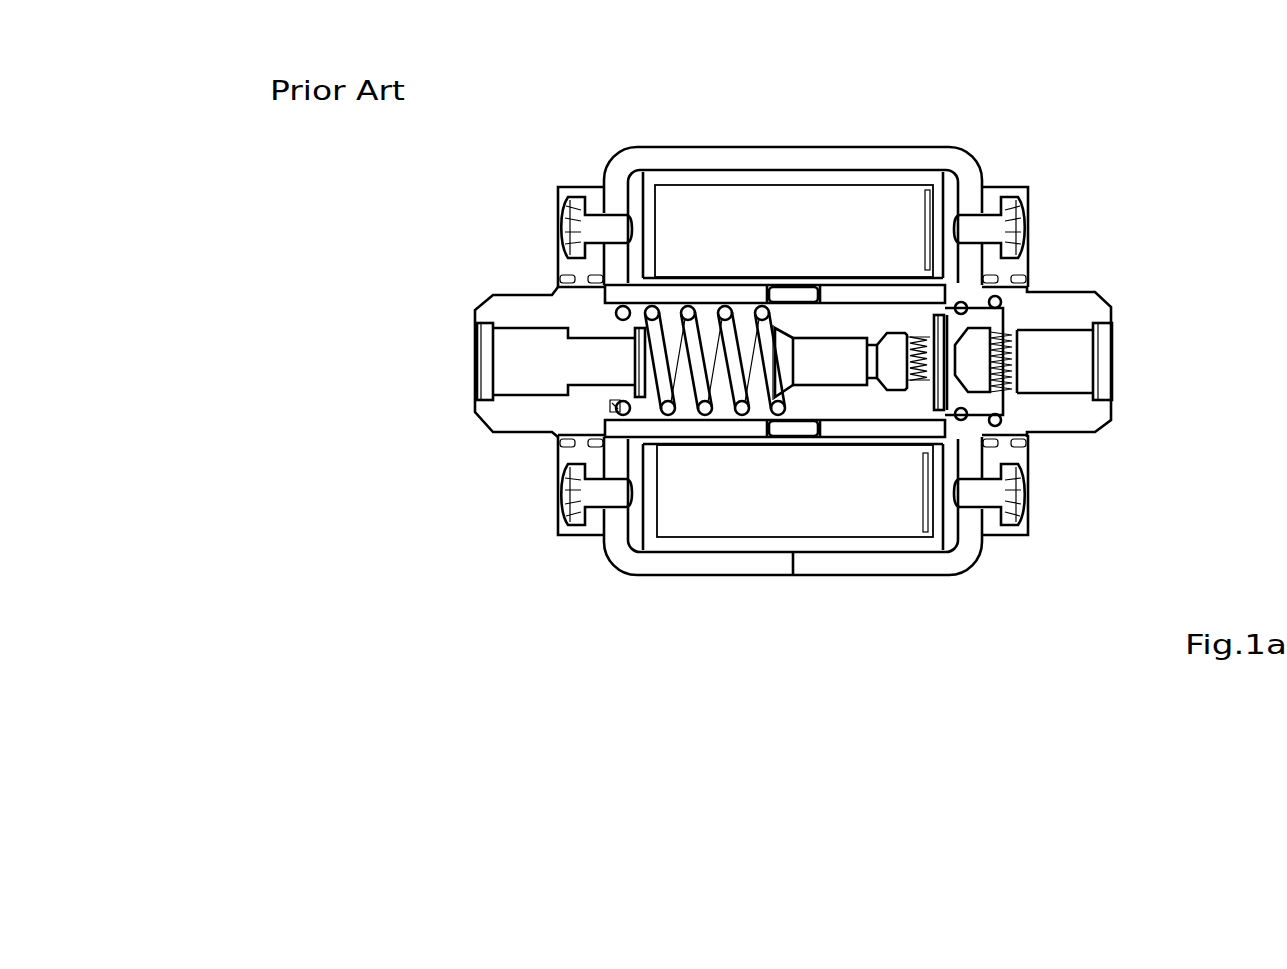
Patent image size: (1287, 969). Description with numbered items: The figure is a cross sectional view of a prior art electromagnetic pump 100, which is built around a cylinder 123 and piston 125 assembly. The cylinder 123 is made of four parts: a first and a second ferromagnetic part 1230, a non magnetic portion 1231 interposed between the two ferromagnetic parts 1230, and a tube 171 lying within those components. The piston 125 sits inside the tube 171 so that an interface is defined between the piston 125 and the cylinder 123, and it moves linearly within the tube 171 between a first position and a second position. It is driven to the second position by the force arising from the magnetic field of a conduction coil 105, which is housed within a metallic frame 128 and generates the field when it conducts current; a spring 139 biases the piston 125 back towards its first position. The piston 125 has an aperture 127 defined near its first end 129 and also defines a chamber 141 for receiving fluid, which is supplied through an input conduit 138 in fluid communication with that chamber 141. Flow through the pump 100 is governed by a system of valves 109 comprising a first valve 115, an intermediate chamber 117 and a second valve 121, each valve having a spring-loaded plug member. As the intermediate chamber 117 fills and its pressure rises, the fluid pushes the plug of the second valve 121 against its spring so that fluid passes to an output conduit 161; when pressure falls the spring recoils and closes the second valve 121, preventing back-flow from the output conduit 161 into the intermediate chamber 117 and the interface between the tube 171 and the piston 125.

The electromagnetic pump 100 is at (845, 112).
The conduction coil 105 is at (728, 222).
The non magnetic portion 1231 is at (795, 297).
The tube 171 is at (883, 303).
The metallic frame 128 is at (925, 160).
The ferromagnetic part 1230 is at (690, 297).
The spring 139 is at (654, 345).
The input conduit 138 is at (520, 305).
The system of valves 109 is at (893, 357).
The output conduit 161 is at (1078, 310).
The intermediate chamber 117 is at (945, 365).
The second valve 121 is at (970, 375).
The first end 129 is at (940, 405).
The aperture 127 is at (873, 338).
The chamber 141 is at (838, 365).
The cylinder 123 is at (870, 370).
The piston 125 is at (880, 390).
The first valve 115 is at (900, 390).